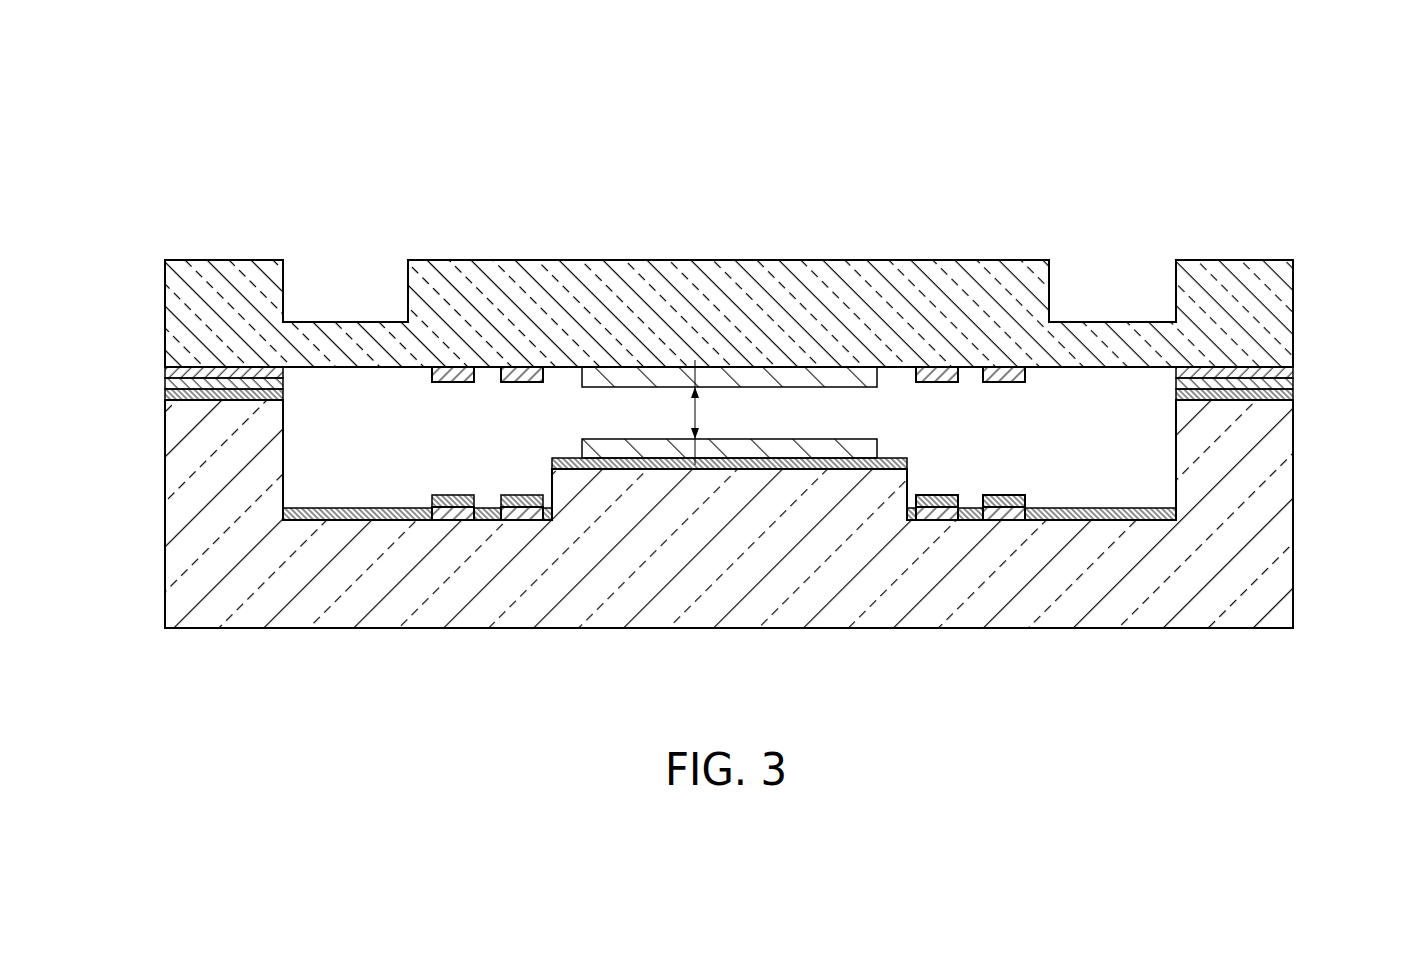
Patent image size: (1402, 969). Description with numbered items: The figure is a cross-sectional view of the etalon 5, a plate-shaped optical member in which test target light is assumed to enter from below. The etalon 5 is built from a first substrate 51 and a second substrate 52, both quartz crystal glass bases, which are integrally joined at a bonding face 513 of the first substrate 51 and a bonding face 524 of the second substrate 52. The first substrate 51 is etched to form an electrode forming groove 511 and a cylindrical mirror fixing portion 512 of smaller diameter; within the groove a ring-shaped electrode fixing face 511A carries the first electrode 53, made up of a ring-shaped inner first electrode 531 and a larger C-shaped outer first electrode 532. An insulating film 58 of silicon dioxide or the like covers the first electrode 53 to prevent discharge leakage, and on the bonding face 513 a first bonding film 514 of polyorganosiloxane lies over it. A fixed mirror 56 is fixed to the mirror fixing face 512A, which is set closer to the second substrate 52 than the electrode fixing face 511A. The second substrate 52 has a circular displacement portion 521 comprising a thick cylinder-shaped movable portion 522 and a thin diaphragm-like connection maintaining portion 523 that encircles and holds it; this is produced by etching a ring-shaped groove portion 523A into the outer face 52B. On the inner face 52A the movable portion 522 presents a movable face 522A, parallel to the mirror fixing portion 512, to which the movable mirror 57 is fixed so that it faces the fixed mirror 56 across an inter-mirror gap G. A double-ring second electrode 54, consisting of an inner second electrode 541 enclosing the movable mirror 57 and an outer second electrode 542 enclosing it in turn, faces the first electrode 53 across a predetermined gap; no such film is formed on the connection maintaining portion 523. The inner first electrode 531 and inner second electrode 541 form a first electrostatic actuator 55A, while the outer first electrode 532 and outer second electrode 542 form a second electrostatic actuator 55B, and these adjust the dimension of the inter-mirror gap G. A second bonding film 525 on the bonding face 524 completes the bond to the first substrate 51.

The etalon 5 is at (916, 110).
The first substrate 51 is at (1293, 486).
The electrode forming groove 511 is at (283, 492).
The electrode fixing face 511A is at (366, 510).
The mirror fixing portion 512 is at (884, 484).
The mirror fixing face 512A is at (568, 462).
The bonding face of the first substrate 513 is at (1293, 393).
The first bonding film 514 is at (165, 384).
The second substrate 52 is at (1293, 309).
The face of the second substrate facing the first substrate 52A is at (559, 368).
The face of the second substrate opposite the first substrate 52B is at (607, 260).
The displacement portion 521 is at (1153, 218).
The movable portion 522 is at (950, 260).
The movable face 522A is at (1047, 371).
The connection maintaining portion 523 is at (1118, 322).
The groove portion 523A is at (1057, 262).
The bonding face of the second substrate 524 is at (1293, 372).
The second bonding film 525 is at (165, 372).
The first electrode 53 is at (746, 613).
The inner first electrode 531 is at (517, 515).
The outer first electrode 532 is at (465, 515).
The second electrode 54 is at (774, 420).
The inner second electrode 541 is at (528, 367).
The outer second electrode 542 is at (462, 367).
The first electrostatic actuator 55A is at (995, 677).
The second electrostatic actuator 55B is at (1120, 677).
The fixed mirror 56 is at (817, 438).
The movable mirror 57 is at (771, 388).
The insulating film 58 is at (165, 395).
The inter-mirror gap G is at (705, 412).